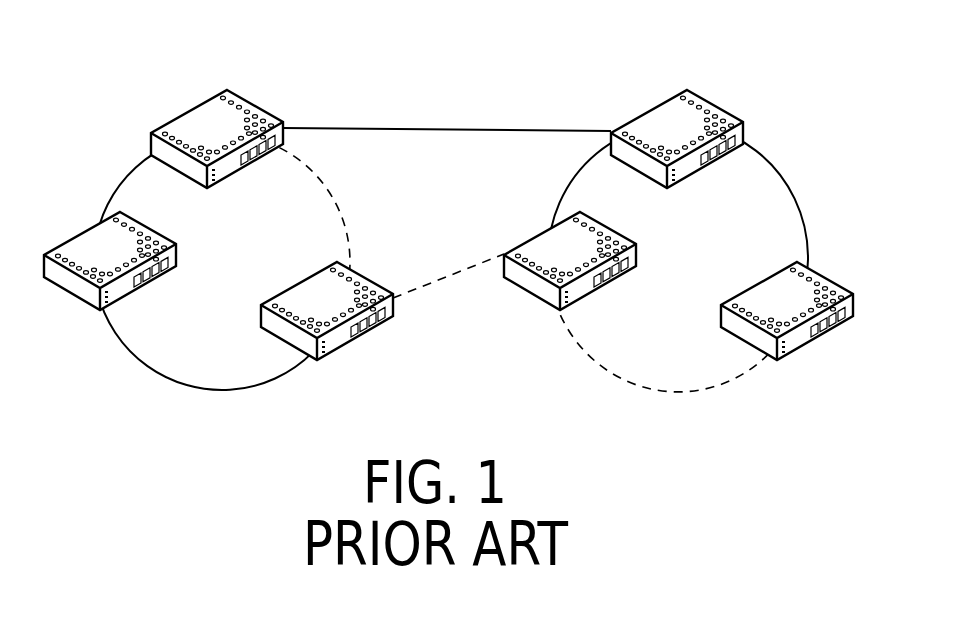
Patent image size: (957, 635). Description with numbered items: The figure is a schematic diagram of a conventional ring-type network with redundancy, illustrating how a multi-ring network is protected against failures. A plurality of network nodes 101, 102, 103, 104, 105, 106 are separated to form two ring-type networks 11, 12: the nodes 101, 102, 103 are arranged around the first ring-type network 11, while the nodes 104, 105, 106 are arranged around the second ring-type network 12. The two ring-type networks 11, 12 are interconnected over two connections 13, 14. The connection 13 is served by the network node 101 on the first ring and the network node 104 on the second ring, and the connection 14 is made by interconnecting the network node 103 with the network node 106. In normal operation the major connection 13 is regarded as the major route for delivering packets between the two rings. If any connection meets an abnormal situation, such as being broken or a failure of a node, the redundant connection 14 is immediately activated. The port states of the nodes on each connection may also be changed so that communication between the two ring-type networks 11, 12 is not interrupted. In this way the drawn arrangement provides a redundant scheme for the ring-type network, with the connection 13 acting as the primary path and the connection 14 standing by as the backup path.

The ring-type network 11 is at (237, 272).
The ring-type network 12 is at (700, 272).
The major connection 13 is at (446, 128).
The redundant connection 14 is at (452, 283).
The network node 101 is at (240, 110).
The network node 102 is at (87, 233).
The network node 103 is at (360, 292).
The network node 104 is at (700, 110).
The network node 105 is at (817, 293).
The network node 106 is at (564, 230).